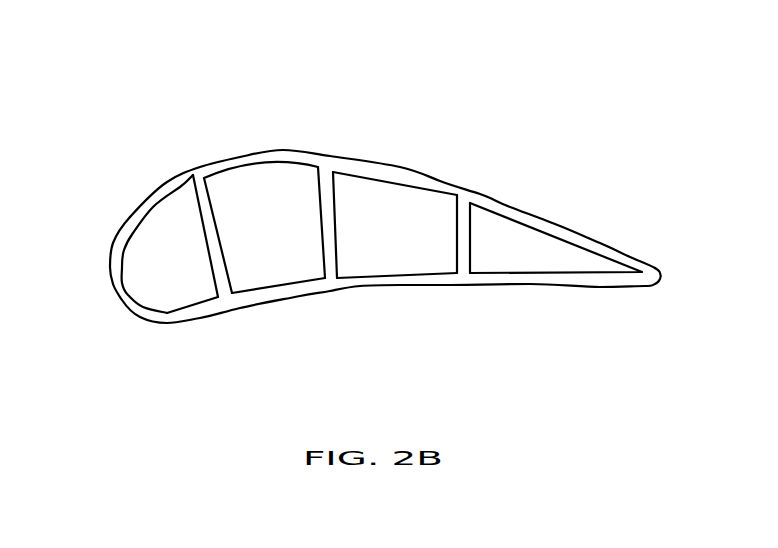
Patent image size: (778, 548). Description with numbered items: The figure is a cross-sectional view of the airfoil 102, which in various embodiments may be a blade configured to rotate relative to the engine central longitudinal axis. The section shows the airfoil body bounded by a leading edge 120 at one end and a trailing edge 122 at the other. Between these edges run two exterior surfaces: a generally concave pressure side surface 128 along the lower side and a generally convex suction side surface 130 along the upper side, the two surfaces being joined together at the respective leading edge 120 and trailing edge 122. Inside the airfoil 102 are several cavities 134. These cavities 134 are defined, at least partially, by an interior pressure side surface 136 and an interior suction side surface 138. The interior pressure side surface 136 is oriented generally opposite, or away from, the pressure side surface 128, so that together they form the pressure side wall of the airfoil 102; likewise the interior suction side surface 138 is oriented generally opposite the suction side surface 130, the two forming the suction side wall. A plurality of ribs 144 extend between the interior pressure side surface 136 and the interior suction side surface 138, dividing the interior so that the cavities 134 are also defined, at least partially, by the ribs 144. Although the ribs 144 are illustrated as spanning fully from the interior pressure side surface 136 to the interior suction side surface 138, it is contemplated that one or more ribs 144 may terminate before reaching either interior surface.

The airfoil 102 is at (98, 120).
The leading edge 120 is at (111, 270).
The trailing edge 122 is at (661, 276).
The pressure side surface 128 is at (278, 301).
The suction side surface 130 is at (257, 150).
The cavities 134 is at (152, 264).
The interior pressure side surface 136 is at (297, 282).
The interior suction side surface 138 is at (422, 190).
The ribs 144 is at (200, 203).